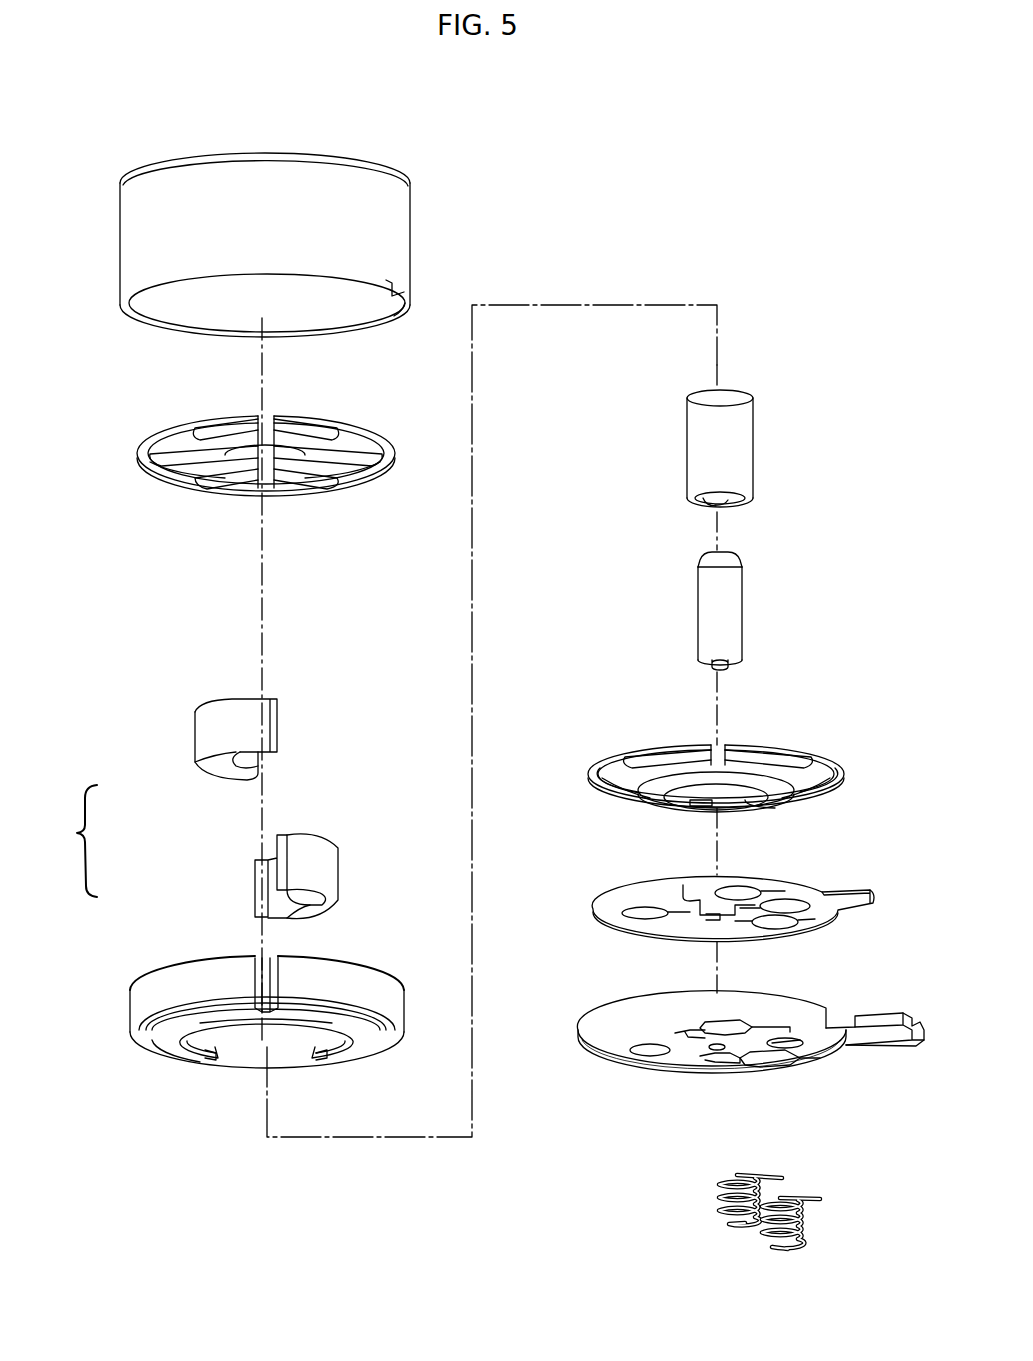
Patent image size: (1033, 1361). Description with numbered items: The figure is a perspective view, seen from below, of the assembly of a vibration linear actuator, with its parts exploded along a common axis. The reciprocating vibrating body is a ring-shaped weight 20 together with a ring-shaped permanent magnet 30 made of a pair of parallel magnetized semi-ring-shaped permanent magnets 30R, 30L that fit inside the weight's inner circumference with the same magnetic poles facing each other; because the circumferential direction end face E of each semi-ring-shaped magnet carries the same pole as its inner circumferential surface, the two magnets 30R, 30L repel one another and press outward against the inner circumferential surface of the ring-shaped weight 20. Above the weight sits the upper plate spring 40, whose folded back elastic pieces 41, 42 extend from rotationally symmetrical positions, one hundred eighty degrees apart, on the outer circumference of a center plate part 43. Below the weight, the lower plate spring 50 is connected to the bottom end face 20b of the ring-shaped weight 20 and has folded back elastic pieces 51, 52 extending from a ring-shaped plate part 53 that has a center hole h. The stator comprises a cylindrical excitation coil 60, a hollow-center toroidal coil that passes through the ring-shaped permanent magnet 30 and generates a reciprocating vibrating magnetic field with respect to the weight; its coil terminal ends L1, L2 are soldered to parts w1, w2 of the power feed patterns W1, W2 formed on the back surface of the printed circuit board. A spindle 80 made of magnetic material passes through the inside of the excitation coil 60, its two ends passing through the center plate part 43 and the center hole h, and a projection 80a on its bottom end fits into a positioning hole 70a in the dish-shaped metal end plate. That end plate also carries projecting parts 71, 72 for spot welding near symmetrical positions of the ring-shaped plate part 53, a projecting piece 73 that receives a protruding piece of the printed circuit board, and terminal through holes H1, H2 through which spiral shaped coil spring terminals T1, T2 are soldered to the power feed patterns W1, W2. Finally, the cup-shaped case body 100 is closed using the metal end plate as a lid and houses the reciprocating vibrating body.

The cup-shaped case body 100 is at (366, 165).
The upper plate spring 40 is at (269, 461).
The folded back elastic piece 41 is at (158, 487).
The folded back elastic piece 42 is at (362, 483).
The center plate part 43 is at (247, 453).
The ring-shaped permanent magnet 30 is at (190, 817).
The semi-ring-shaped permanent magnet 30L is at (195, 738).
The semi-ring-shaped permanent magnet 30R is at (253, 887).
The circumferential direction end face E is at (278, 727).
The ring-shaped weight 20 is at (275, 1006).
The bottom end face 20b is at (178, 1058).
The cylindrical excitation coil 60 is at (737, 463).
The coil terminal end L1 is at (703, 500).
The coil terminal end L2 is at (725, 502).
The spindle 80 is at (773, 625).
The projection 80a is at (722, 667).
The lower plate spring 50 is at (733, 762).
The folded back elastic piece 51 is at (600, 772).
The folded back elastic piece 52 is at (848, 777).
The ring-shaped plate part 53 is at (768, 808).
The center hole h is at (685, 806).
The part of power feed pattern w1 is at (683, 885).
The power feed pattern W1 is at (745, 890).
The power feed pattern W2 is at (786, 922).
The part of power feed pattern w2 is at (712, 920).
The terminal through hole H1 is at (750, 1027).
The terminal through hole H2 is at (775, 1065).
The projecting part 71 is at (645, 1055).
The projecting part 72 is at (795, 1042).
The projecting piece 73 is at (890, 1045).
The positioning hole 70a is at (717, 1050).
The spiral shaped coil spring terminal T1 is at (718, 1182).
The spiral shaped coil spring terminal T2 is at (800, 1215).